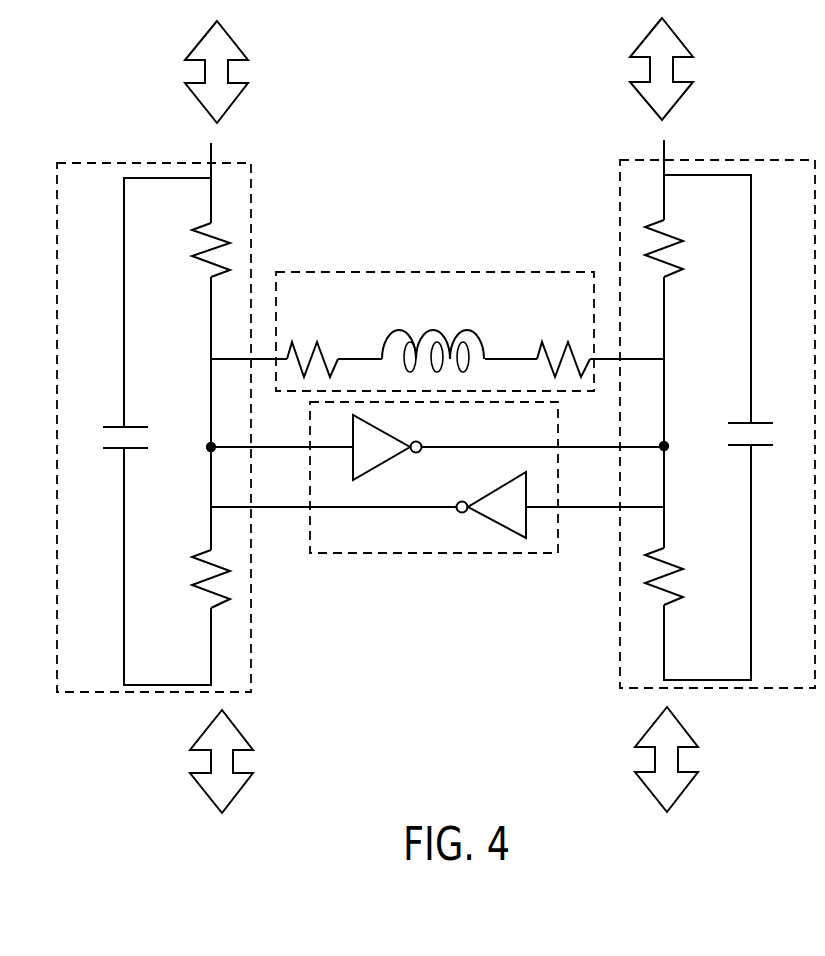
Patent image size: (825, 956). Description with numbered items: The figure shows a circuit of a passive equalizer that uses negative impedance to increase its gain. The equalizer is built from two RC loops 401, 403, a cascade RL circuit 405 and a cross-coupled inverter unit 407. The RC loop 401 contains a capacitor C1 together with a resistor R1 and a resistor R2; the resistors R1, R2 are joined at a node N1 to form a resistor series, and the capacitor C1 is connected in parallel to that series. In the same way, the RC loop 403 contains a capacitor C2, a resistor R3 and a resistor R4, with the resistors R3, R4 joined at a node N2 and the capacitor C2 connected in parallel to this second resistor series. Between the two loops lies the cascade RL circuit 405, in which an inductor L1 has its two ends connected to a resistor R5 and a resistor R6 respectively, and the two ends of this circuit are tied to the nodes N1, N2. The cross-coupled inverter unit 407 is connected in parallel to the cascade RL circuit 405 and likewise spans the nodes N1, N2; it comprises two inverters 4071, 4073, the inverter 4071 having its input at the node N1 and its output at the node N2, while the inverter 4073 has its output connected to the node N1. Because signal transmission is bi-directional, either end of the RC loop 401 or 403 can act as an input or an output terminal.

The RC loop 401 is at (154, 455).
The RC loop 403 is at (717, 449).
The cascade RL circuit 405 is at (437, 298).
The cross-coupled inverter unit 407 is at (437, 503).
The inverter 4071 is at (437, 443).
The inverter 4073 is at (437, 503).
The resistor R1 is at (189, 250).
The resistor R2 is at (190, 579).
The resistor R3 is at (683, 248).
The resistor R4 is at (685, 576).
The resistor R5 is at (312, 338).
The resistor R6 is at (562, 338).
The inductor L1 is at (433, 336).
The capacitor C1 is at (107, 440).
The capacitor C2 is at (769, 439).
The node N1 is at (197, 442).
The node N2 is at (682, 440).